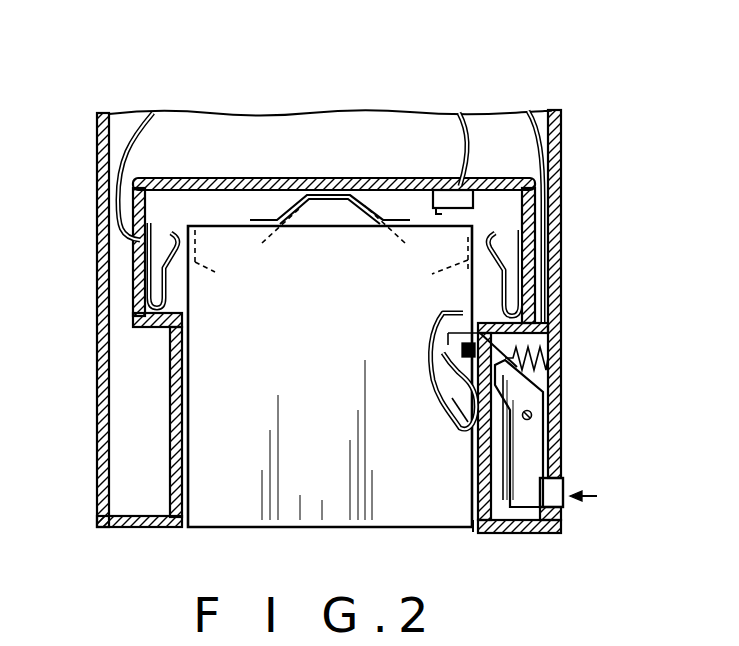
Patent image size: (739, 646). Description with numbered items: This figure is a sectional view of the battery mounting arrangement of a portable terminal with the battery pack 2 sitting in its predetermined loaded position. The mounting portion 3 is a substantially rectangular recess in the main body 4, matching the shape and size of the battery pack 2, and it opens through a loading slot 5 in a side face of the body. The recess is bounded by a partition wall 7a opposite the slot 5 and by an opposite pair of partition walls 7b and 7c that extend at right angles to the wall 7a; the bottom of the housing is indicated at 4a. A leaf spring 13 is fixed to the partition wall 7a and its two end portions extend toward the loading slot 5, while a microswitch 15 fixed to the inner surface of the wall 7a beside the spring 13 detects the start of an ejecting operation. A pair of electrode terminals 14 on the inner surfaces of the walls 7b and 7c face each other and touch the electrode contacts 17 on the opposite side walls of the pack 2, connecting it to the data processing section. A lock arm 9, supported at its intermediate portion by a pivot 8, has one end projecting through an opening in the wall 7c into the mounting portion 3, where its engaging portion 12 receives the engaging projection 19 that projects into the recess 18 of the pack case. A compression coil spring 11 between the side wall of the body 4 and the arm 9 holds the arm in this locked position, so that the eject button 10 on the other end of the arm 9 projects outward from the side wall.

The battery pack 2 is at (243, 513).
The mounting portion 3 is at (502, 202).
The main body 4 is at (106, 380).
The housing bottom wall 4a is at (537, 533).
The loading slot 5 is at (473, 535).
The partition wall 7a is at (182, 184).
The partition wall 7b is at (177, 453).
The partition wall 7c is at (473, 472).
The pivot 8 is at (532, 414).
The lock arm 9 is at (548, 443).
The eject button 10 is at (572, 485).
The compression coil spring 11 is at (550, 350).
The engaging portion 12 is at (457, 380).
The leaf spring 13 is at (272, 218).
The electrode terminals 14 is at (163, 267).
The microswitch 15 is at (441, 200).
The electrode contacts 17 is at (331, 264).
The recess 18 is at (460, 413).
The engaging projection 19 is at (463, 313).